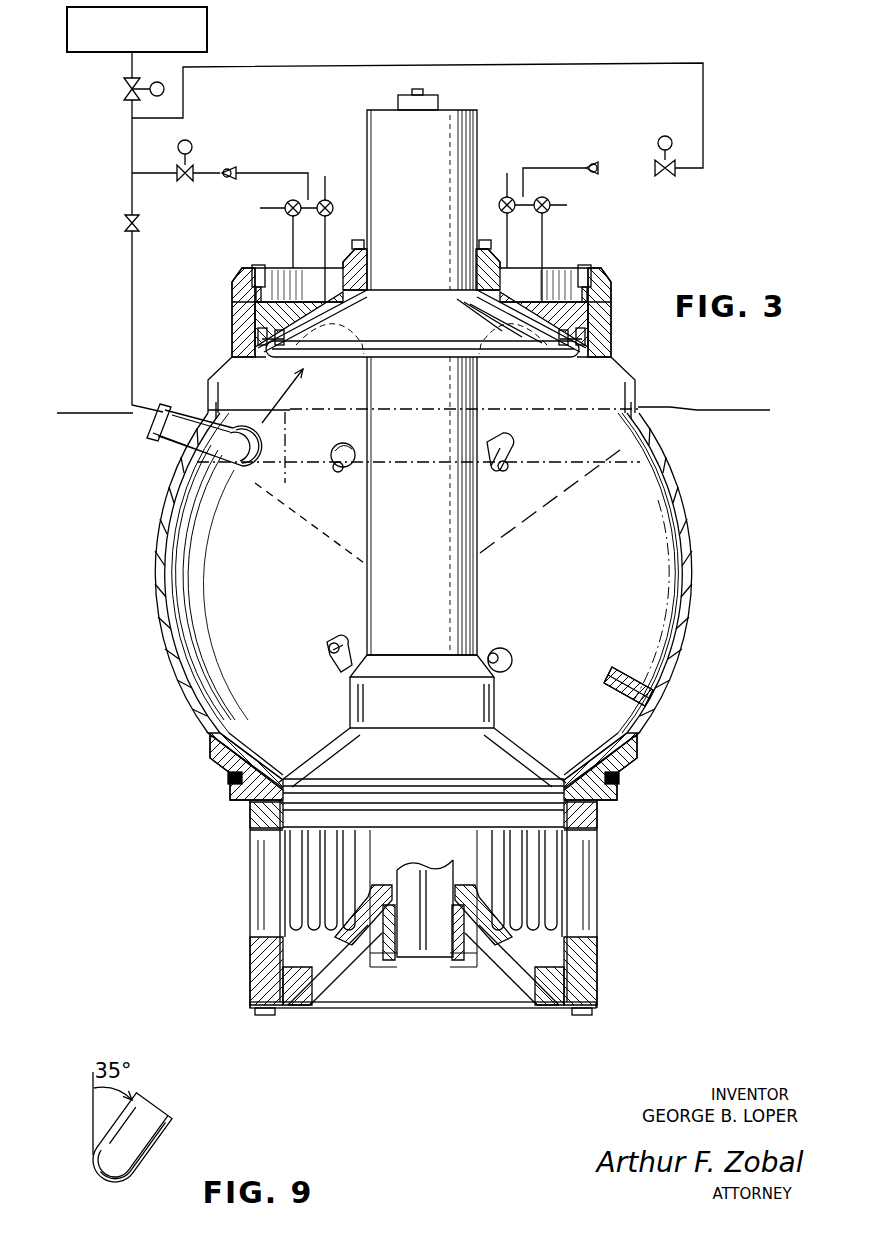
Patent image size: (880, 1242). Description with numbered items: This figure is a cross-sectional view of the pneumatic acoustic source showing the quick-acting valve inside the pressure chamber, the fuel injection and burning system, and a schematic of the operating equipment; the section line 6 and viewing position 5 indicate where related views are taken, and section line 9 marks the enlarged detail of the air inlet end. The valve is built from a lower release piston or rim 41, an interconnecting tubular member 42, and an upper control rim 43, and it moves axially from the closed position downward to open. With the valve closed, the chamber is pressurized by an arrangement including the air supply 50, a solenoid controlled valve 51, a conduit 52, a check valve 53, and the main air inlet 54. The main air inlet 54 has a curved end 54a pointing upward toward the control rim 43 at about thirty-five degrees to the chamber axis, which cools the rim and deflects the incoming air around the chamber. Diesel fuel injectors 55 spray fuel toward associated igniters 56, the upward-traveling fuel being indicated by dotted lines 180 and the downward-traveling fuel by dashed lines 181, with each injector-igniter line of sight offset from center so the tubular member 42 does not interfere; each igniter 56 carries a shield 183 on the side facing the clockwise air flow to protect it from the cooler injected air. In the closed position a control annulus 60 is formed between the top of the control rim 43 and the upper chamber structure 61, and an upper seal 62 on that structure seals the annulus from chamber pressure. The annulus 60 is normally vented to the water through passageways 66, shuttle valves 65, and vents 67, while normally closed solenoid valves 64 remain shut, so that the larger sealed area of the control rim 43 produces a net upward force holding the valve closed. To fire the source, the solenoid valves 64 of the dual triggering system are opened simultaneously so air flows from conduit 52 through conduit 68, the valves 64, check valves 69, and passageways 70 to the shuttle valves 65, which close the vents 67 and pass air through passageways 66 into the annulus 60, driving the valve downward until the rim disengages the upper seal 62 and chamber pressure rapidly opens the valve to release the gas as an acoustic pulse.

In FIG. 3, the air supply 50 is at (137, 42).
In FIG. 3, the solenoid controlled valve 51 is at (125, 82).
In FIG. 3, the conduit 52 is at (130, 115).
In FIG. 3, the check valve 53 is at (128, 221).
In FIG. 3, the conduit 68 is at (145, 176).
In FIG. 3, the solenoid valves 64 is at (189, 165).
In FIG. 3, the check valves 69 is at (226, 179).
In FIG. 3, the passageways 70 is at (256, 173).
In FIG. 3, the vents 67 is at (325, 178).
In FIG. 3, the shuttle valves 65 is at (330, 202).
In FIG. 3, the passageways 66 is at (292, 254).
In FIG. 3, the upper chamber structure 61 is at (607, 300).
In FIG. 3, the control annulus 60 is at (474, 306).
In FIG. 3, the control rim 43 is at (500, 352).
In FIG. 3, the upper seal 62 is at (242, 350).
In FIG. 3, the tubular member 42 is at (478, 606).
In FIG. 3, the lower release piston or rim 41 is at (540, 746).
In FIG. 3, the main air inlet 54 is at (167, 412).
In FIG. 3, the curved end 54a is at (218, 476).
In FIG. 9, the curved end 54a is at (155, 1152).
In FIG. 3, the fuel injectors 55 is at (343, 474).
In FIG. 3, the igniters 56 is at (510, 468).
In FIG. 3, the shield 183 is at (512, 445).
In FIG. 3, the dotted lines 180 is at (330, 540).
In FIG. 3, the dashed lines 181 is at (533, 517).
In FIG. 3, the section line 5- 5 is at (185, 401).
In FIG. 3, the section line 6- 6 is at (95, 412).
In FIG. 3, the section line 9- 9 is at (290, 418).